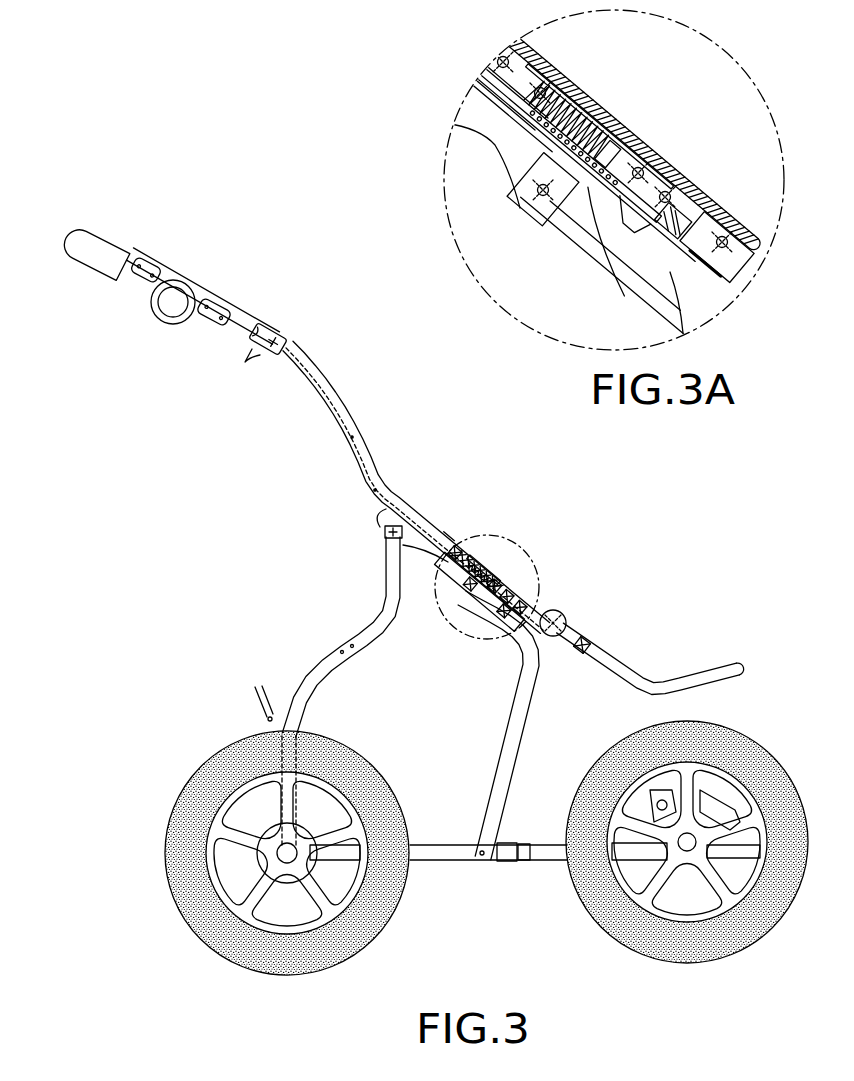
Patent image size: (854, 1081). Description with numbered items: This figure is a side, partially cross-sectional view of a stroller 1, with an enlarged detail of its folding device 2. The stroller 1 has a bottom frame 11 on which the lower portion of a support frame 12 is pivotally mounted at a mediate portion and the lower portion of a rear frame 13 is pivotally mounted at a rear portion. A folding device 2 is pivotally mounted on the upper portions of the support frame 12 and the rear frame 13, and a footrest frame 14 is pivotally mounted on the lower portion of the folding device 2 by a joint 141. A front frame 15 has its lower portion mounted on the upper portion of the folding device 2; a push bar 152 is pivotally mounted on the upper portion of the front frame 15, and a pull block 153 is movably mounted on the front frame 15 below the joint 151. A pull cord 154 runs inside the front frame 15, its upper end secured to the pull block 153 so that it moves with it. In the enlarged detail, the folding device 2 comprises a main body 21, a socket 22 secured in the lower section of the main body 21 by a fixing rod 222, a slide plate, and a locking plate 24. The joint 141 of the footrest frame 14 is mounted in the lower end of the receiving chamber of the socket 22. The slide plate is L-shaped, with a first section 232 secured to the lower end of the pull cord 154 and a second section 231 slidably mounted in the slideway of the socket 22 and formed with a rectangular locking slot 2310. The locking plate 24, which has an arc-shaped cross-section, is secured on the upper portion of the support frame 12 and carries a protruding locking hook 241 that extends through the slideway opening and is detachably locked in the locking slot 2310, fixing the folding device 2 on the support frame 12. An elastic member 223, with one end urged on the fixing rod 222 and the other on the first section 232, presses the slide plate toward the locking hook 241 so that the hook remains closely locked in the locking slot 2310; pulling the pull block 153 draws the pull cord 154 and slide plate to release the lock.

In FIG. 3, the stroller 1 is at (302, 492).
In FIG. 3A, the folding device 2 is at (686, 110).
In FIG. 3, the bottom frame 11 is at (446, 862).
In FIG. 3, the support frame 12 is at (506, 751).
In FIG. 3A, the support frame 12 is at (640, 275).
In FIG. 3, the rear frame 13 is at (330, 660).
In FIG. 3, the footrest frame 14 is at (676, 686).
In FIG. 3, the front frame 15 is at (322, 396).
In FIG. 3, the main body 21 is at (421, 507).
In FIG. 3A, the main body 21 is at (678, 174).
In FIG. 3, the socket 22 is at (452, 572).
In FIG. 3A, the socket 22 is at (506, 176).
In FIG. 3A, the locking plate 24 is at (680, 330).
In FIG. 3, the joint 141 is at (567, 622).
In FIG. 3A, the joint 141 is at (722, 236).
In FIG. 3, the joint 151 is at (170, 305).
In FIG. 3, the push bar 152 is at (110, 250).
In FIG. 3, the pull block 153 is at (250, 347).
In FIG. 3, the pull cord 154 is at (352, 440).
In FIG. 3A, the pull cord 154 is at (490, 138).
In FIG. 3, the fixing rod 222 is at (474, 550).
In FIG. 3A, the fixing rod 222 is at (543, 84).
In FIG. 3, the elastic member 223 is at (498, 560).
In FIG. 3A, the elastic member 223 is at (604, 102).
In FIG. 3A, the second section 231 is at (556, 236).
In FIG. 3A, the first section 232 is at (650, 180).
In FIG. 3, the locking hook 241 is at (506, 580).
In FIG. 3A, the locking hook 241 is at (648, 165).
In FIG. 3A, the locking slot 2310 is at (600, 275).